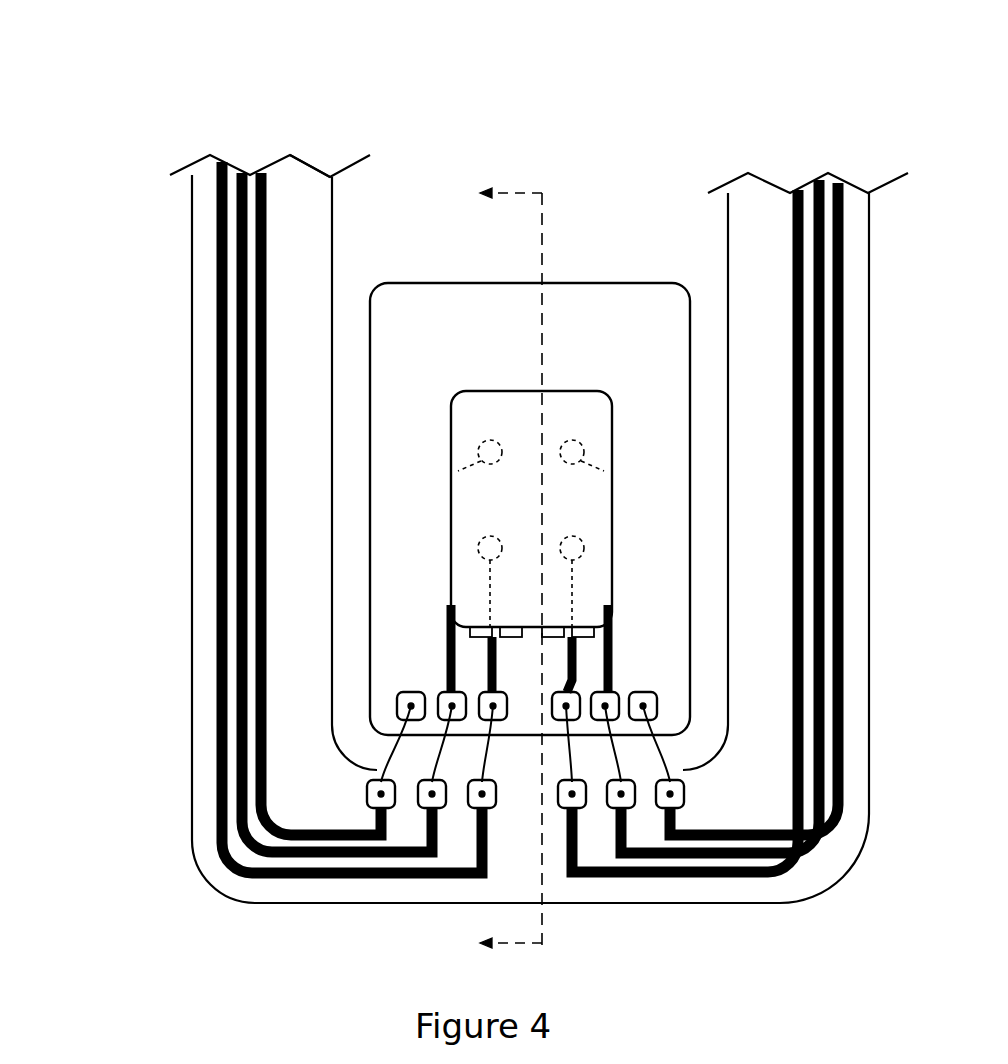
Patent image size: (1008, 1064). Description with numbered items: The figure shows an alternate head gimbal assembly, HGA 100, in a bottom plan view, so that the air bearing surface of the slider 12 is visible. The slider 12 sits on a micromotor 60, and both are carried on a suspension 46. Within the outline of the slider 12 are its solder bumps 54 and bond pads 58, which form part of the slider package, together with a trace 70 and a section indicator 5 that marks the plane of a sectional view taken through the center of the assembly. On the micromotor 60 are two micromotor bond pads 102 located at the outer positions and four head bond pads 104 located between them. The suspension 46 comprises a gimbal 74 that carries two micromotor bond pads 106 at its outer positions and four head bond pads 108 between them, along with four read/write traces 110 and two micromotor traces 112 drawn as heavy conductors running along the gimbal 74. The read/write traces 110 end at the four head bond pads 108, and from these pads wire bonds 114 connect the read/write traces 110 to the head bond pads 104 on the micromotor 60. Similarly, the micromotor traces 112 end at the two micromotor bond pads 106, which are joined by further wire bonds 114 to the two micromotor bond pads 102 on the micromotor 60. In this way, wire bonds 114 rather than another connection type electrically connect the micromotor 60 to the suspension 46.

The HGA 100 is at (538, 76).
The section line 5- 5 is at (491, 572).
The suspension 46 is at (155, 372).
The gimbal 74 is at (300, 180).
The micromotor traces 112 is at (266, 660).
The read/write traces 110 is at (265, 855).
The micromotor 60 is at (628, 283).
The slider 12 is at (571, 391).
The solder bumps 54 is at (572, 438).
The traces 70 is at (576, 582).
The bond pads 58 is at (482, 640).
The micromotor bond pads 102 is at (405, 703).
The head bond pads 104 is at (588, 694).
The micromotor bond pads 106 is at (367, 797).
The head bond pads 108 is at (610, 782).
The wire bonds 114 is at (382, 747).